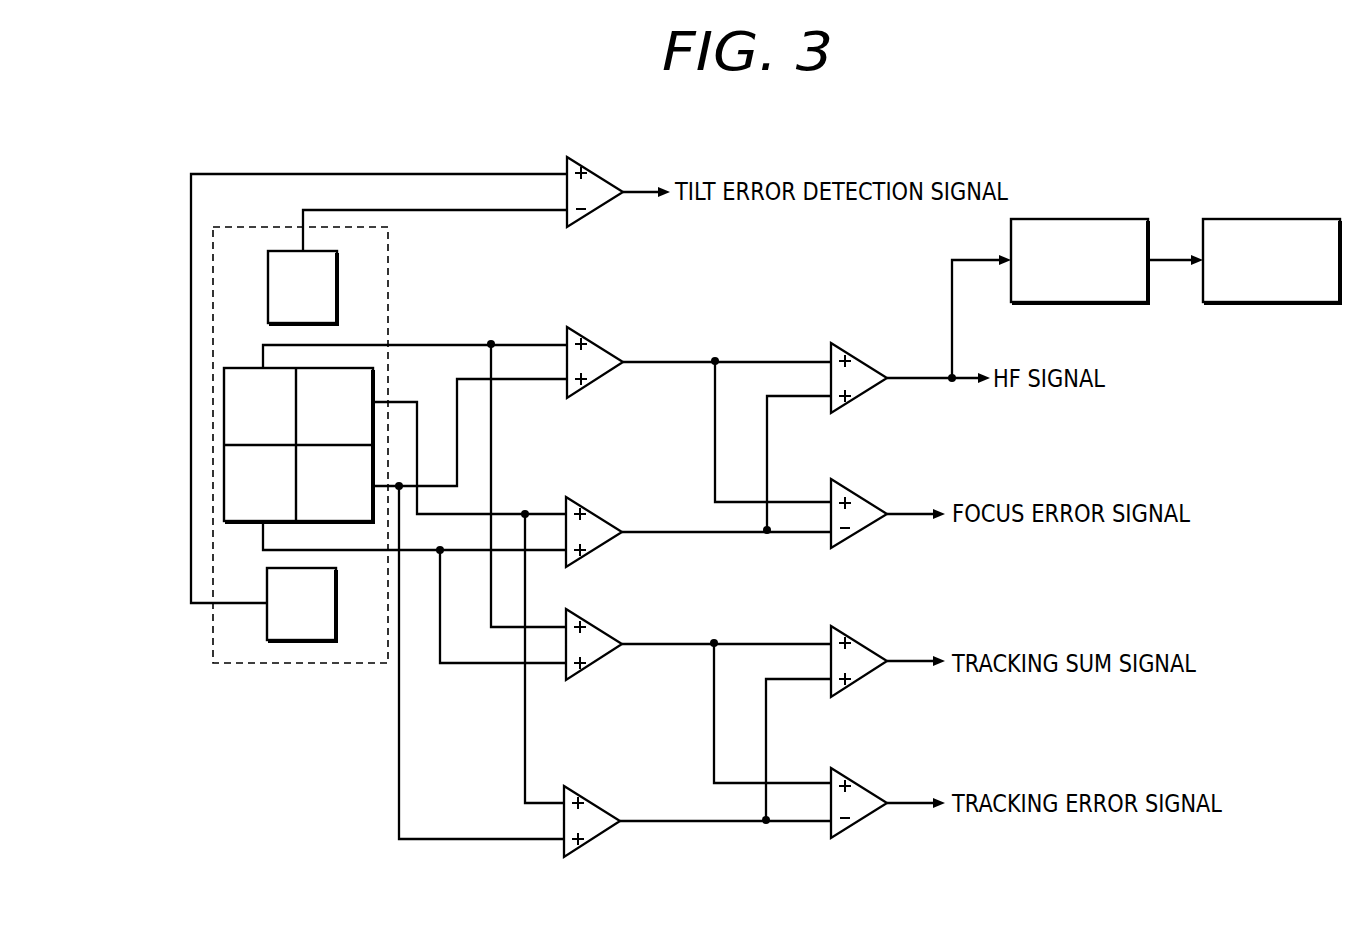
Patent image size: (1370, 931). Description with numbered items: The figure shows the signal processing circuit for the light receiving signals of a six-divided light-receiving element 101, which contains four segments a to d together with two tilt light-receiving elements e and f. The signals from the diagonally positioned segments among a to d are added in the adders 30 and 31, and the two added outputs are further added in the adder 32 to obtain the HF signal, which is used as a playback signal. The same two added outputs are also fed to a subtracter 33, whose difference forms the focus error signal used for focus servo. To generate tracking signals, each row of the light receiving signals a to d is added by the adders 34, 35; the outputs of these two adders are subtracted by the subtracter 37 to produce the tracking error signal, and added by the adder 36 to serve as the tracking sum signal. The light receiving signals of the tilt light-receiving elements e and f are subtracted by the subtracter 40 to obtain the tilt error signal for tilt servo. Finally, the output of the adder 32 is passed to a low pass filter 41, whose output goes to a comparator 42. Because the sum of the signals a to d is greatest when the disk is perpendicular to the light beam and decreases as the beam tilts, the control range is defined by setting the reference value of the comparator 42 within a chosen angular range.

The six-divided light-receiving element 101 is at (258, 227).
The adder 30 is at (593, 343).
The adder 31 is at (593, 513).
The adder 32 is at (857, 358).
The subtracter 33 is at (857, 495).
The adder 34 is at (593, 625).
The adder 35 is at (591, 802).
The adder 36 is at (857, 641).
The subtracter 37 is at (857, 783).
The subtracter 40 is at (593, 170).
The low pass filter 41 is at (1120, 218).
The comparator 42 is at (1314, 218).